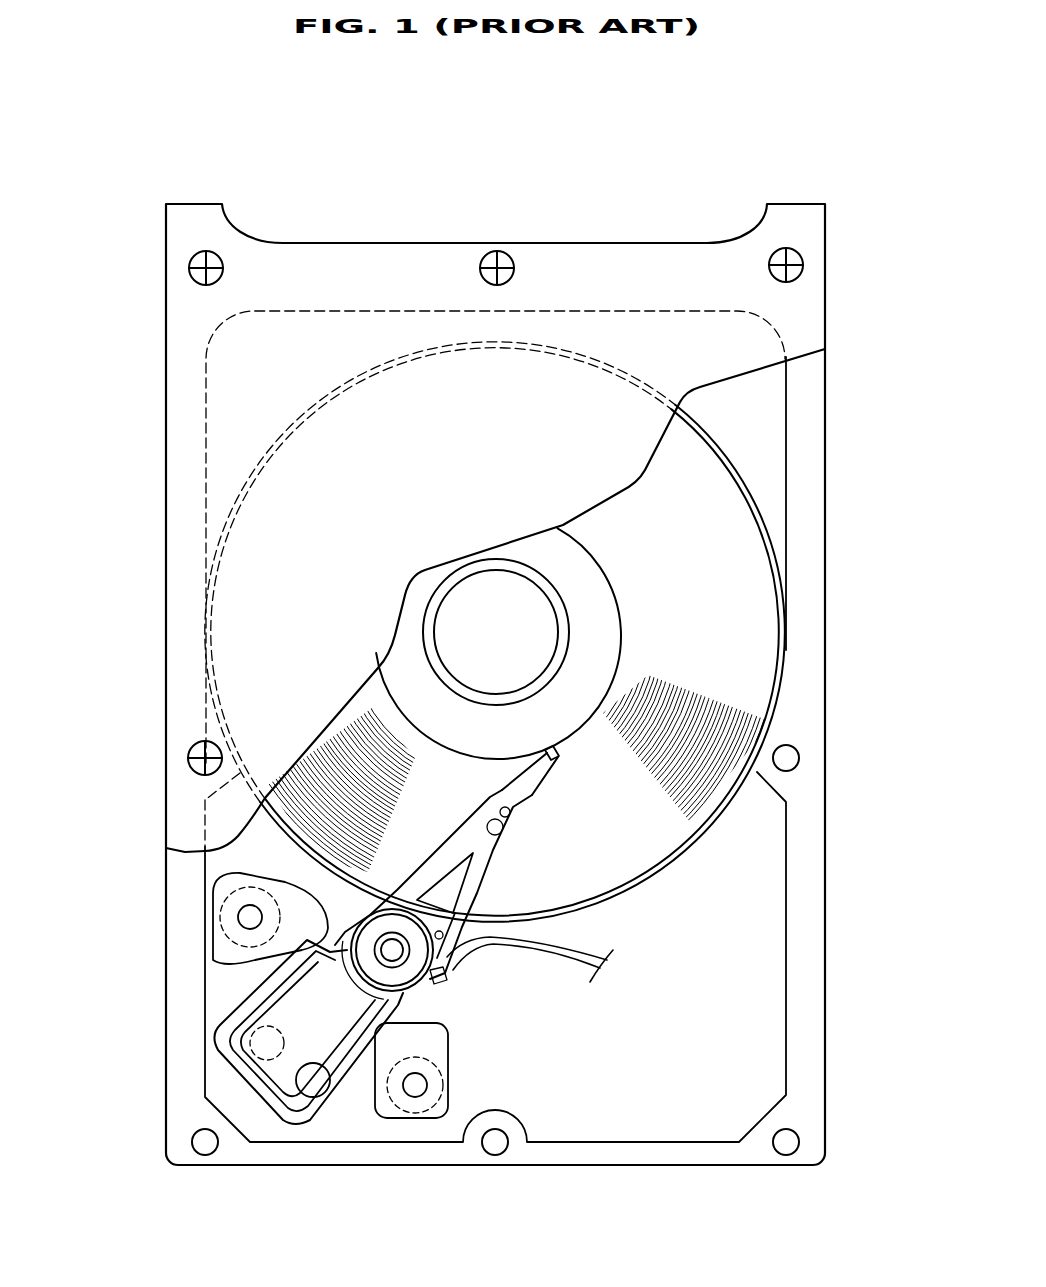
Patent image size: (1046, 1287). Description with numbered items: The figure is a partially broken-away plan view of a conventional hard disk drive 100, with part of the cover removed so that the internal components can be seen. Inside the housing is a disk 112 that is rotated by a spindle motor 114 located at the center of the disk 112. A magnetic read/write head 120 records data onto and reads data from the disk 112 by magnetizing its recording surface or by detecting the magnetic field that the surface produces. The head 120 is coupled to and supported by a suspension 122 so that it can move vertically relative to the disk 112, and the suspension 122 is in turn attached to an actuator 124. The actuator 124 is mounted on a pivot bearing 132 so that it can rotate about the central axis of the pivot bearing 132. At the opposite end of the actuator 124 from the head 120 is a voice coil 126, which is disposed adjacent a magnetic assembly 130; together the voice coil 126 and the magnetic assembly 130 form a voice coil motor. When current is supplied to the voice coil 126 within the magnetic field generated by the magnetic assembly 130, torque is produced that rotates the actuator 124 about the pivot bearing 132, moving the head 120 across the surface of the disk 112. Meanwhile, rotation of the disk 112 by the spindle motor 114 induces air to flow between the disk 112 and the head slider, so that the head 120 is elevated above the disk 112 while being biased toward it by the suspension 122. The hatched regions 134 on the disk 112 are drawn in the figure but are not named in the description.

The hard disk drive 100 is at (824, 174).
The disk 112 is at (745, 568).
The spindle motor 114 is at (470, 612).
The magnetic read/write head 120 is at (556, 760).
The suspension 122 is at (518, 800).
The actuator 124 is at (462, 888).
The voice coil 126 is at (237, 1032).
The magnetic assembly 130 is at (363, 1100).
The pivot bearing 132 is at (407, 963).
The data recording zone 134 is at (360, 752).